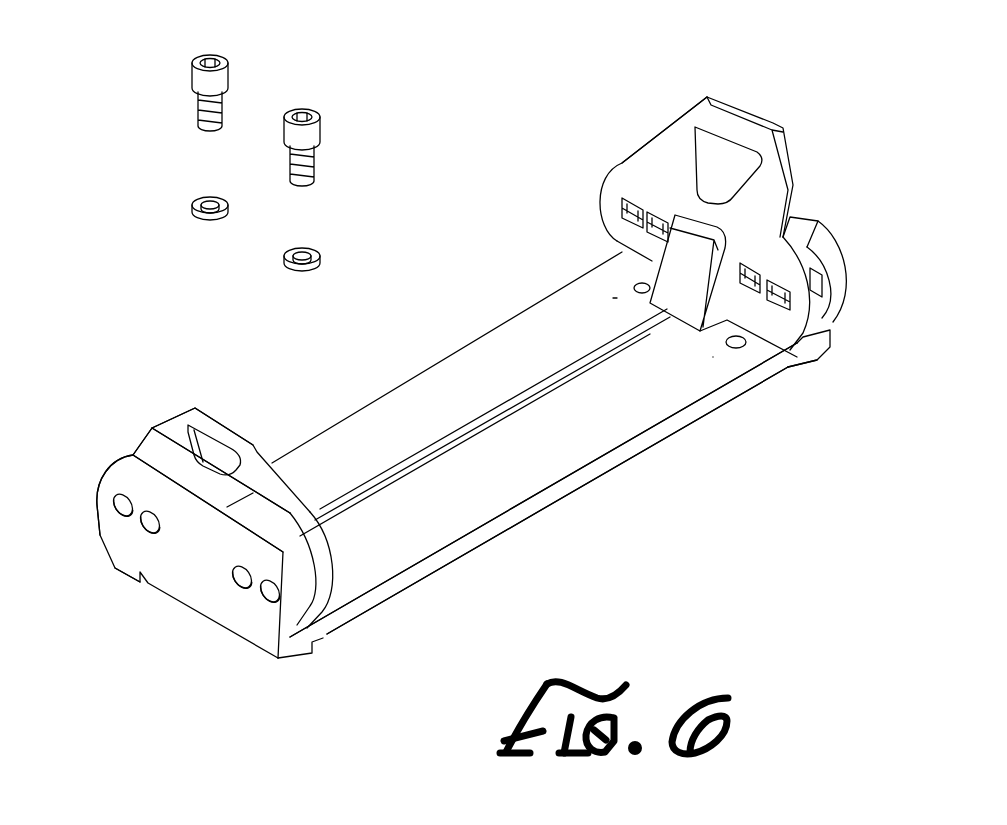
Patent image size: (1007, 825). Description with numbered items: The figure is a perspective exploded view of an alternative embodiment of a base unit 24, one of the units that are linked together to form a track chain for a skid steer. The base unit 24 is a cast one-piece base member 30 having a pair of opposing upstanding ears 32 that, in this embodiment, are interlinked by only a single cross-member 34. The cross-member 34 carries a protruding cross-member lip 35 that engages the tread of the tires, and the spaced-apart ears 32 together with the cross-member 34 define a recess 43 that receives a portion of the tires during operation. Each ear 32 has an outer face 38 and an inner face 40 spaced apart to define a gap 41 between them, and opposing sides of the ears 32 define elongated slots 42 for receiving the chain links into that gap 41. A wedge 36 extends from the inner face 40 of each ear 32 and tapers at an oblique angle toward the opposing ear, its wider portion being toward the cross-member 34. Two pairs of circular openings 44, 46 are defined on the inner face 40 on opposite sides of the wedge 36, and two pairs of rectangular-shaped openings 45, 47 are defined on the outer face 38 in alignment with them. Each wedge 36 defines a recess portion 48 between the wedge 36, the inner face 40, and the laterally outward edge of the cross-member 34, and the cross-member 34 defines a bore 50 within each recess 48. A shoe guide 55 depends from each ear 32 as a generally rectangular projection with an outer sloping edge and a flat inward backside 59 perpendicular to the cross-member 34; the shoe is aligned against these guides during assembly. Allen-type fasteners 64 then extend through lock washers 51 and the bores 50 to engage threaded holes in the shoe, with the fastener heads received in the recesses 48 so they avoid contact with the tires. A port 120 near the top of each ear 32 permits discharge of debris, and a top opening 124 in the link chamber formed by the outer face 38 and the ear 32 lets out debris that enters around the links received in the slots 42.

The base unit 24 is at (291, 398).
The base member 30 is at (627, 485).
The ear 32 is at (814, 168).
The cross-member 34 is at (420, 395).
The cross-member lip 35 is at (517, 393).
The wedge 36 is at (682, 283).
The outer face 38 is at (115, 477).
The inner face 40 is at (650, 180).
The gap 41 is at (830, 292).
The elongated slot 42 is at (820, 313).
The recess 43 is at (342, 395).
The circular opening 44 is at (655, 207).
The rectangular-shaped opening 45 is at (143, 532).
The circular opening 46 is at (627, 198).
The rectangular-shaped opening 47 is at (114, 513).
The recess portion 48 is at (613, 298).
The bore 50 is at (638, 285).
The lock washer 51 is at (200, 198).
The shoe guide 55 is at (808, 350).
The inward backside 59 is at (790, 370).
The allen-type fastener 64 is at (222, 100).
The port 120 is at (722, 162).
The top opening 124 is at (197, 490).